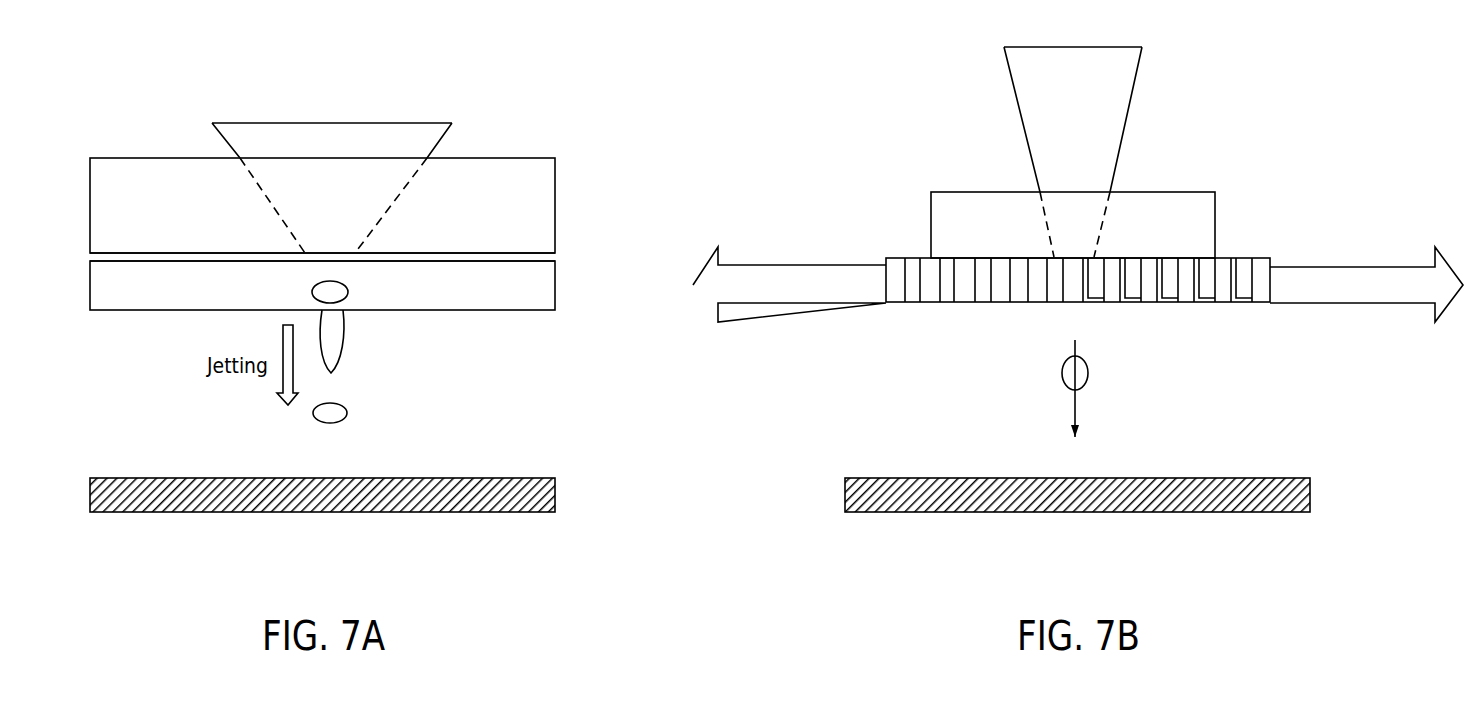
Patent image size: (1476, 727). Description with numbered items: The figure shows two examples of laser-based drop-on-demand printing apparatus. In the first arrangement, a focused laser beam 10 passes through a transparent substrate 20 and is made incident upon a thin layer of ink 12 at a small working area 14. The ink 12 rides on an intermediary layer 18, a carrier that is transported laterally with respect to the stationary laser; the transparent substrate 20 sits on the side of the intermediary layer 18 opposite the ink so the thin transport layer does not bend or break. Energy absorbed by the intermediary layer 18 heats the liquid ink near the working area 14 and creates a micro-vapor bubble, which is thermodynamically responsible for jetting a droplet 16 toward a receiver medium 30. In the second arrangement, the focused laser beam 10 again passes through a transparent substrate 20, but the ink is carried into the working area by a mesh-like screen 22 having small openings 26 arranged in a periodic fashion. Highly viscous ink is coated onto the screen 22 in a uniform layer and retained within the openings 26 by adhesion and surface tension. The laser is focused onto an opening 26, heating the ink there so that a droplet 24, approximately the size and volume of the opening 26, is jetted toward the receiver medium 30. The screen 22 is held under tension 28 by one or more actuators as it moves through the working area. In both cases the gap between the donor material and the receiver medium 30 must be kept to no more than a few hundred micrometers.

In FIG. 7A, the focused laser beam 10 is at (332, 171).
In FIG. 7B, the focused laser beam 10 is at (1130, 102).
In FIG. 7A, the thin layer of ink 12 is at (523, 308).
In FIG. 7B, the thin layer of ink 12 is at (1085, 314).
In FIG. 7A, the working area 14 is at (348, 292).
In FIG. 7A, the droplet 16 is at (350, 412).
In FIG. 7A, the intermediary layer 18 is at (495, 257).
In FIG. 7A, the transparent substrate 20 is at (502, 191).
In FIG. 7B, the transparent substrate 20 is at (1198, 192).
In FIG. 7B, the mesh-like screen 22 is at (1173, 303).
In FIG. 7B, the droplet 24 is at (1088, 378).
In FIG. 7B, the openings 26 is at (935, 303).
In FIG. 7B, the tension 28 is at (1310, 267).
In FIG. 7A, the receiver medium 30 is at (578, 478).
In FIG. 7B, the receiver medium 30 is at (823, 478).